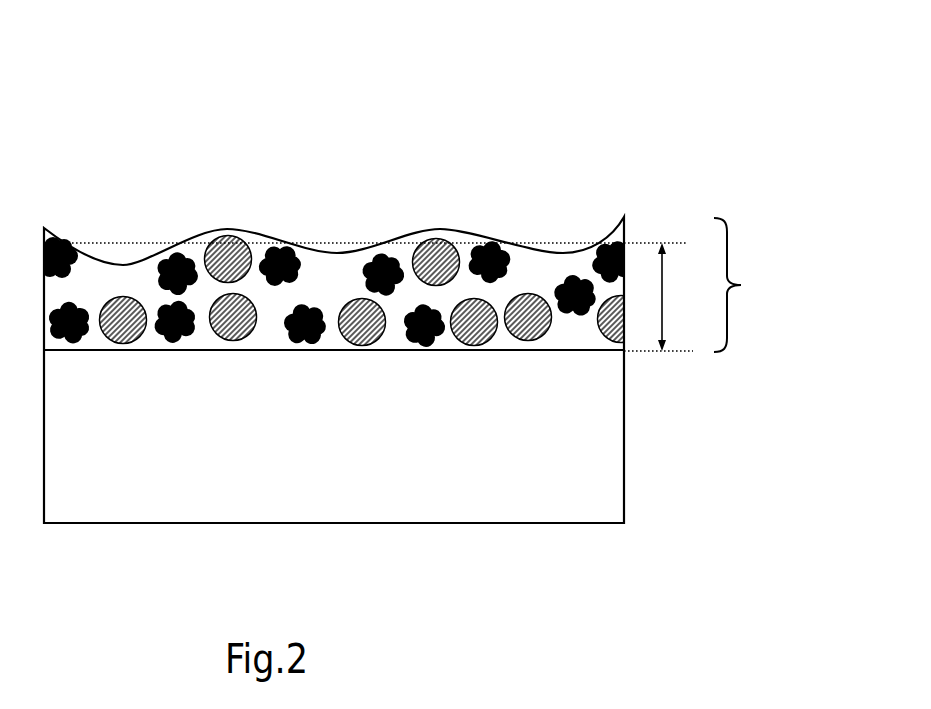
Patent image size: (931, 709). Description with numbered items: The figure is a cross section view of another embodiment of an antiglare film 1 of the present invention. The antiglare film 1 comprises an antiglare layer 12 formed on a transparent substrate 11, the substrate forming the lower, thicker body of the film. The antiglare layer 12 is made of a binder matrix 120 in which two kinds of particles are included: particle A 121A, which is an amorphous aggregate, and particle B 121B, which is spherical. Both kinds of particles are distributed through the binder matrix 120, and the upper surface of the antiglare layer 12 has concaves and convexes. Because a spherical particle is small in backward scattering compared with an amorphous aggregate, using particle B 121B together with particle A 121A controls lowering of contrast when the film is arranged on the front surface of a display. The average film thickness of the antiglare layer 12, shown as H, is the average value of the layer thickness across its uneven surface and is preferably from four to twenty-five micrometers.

The antiglare film 1 is at (583, 125).
The transparent substrate 11 is at (580, 420).
The antiglare layer 12 is at (419, 220).
The binder matrix 120 is at (522, 265).
The particle A 121A is at (183, 260).
The particle B 121B is at (440, 257).